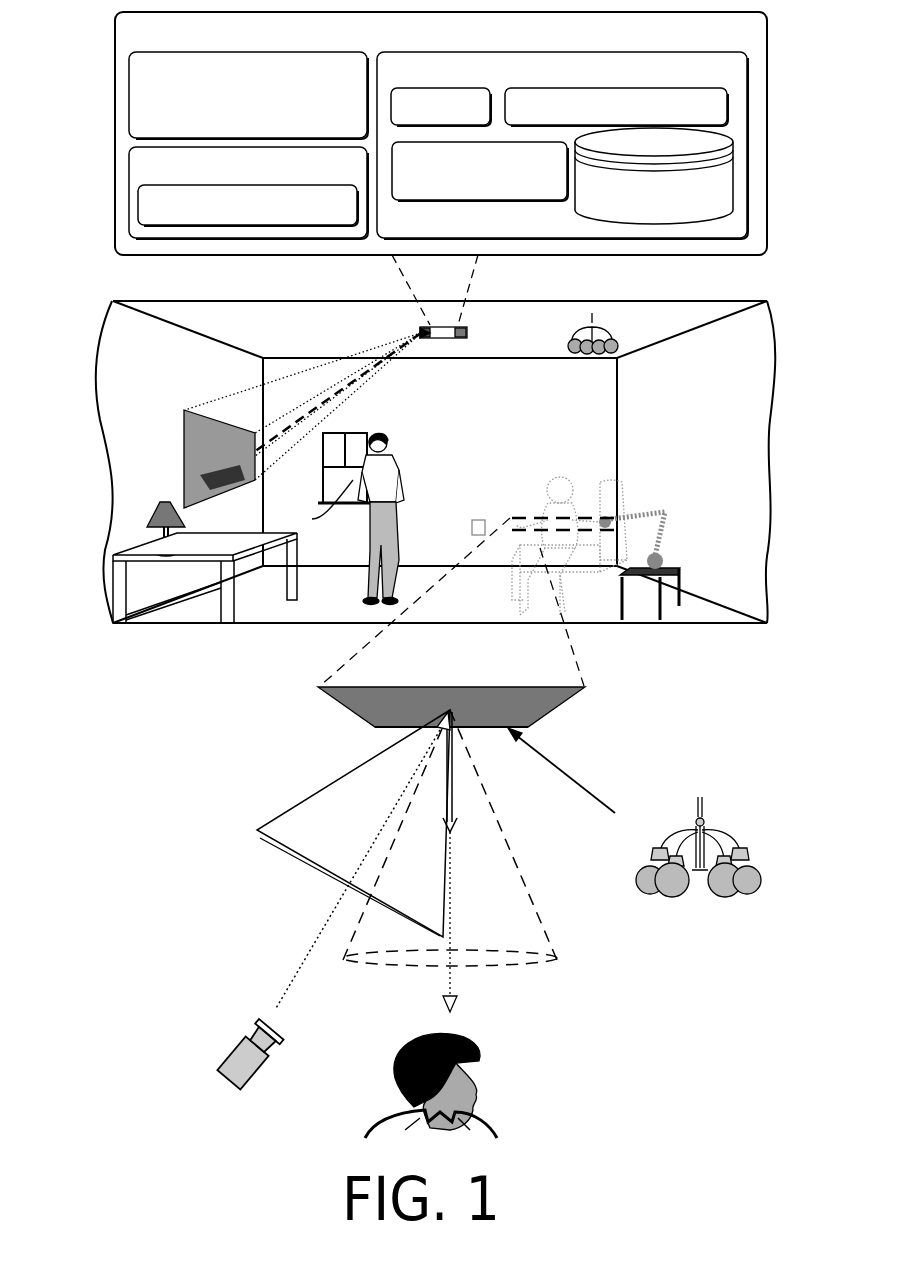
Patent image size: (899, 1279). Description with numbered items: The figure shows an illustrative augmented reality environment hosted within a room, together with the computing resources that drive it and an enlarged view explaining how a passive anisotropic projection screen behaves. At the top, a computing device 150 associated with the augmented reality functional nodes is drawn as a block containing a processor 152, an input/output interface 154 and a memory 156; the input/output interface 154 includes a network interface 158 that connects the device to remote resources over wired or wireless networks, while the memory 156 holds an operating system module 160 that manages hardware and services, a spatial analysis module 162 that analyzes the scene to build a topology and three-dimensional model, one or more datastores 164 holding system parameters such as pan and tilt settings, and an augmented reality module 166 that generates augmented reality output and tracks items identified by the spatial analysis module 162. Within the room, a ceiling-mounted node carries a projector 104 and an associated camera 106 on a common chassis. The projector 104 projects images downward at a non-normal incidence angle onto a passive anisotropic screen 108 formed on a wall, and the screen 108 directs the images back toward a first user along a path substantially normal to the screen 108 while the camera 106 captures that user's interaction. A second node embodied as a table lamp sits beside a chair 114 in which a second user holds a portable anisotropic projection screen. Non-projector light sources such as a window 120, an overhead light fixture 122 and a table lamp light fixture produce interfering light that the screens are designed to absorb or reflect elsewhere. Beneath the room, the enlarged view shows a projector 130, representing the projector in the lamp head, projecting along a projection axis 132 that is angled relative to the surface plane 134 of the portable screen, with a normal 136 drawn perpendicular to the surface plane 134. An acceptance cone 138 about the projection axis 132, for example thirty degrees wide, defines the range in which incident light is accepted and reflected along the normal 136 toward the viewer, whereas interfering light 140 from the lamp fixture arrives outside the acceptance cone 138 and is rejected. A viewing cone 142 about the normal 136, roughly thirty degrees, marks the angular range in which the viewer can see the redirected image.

The computing device 150 is at (547, 39).
The processor 152 is at (320, 105).
The input/output interface 154 is at (295, 176).
The memory 156 is at (618, 81).
The network interface 158 is at (327, 216).
The operating system module 160 is at (475, 118).
The spatial analysis module 162 is at (537, 196).
The datastores 164 is at (670, 218).
The augmented reality module 166 is at (710, 119).
The projector 104 is at (420, 331).
The camera 106 is at (470, 331).
The passive anisotropic screen 108 is at (183, 460).
The chair 114 is at (608, 487).
The window 120 is at (314, 506).
The overhead light fixture 122 is at (152, 513).
The projector 130 is at (230, 1088).
The projection axis 132 is at (302, 967).
The surface plane 134 is at (400, 702).
The normal 136 is at (452, 893).
The acceptance cone 138 is at (257, 830).
The interfering light 140 is at (583, 785).
The viewing cone 142 is at (560, 965).